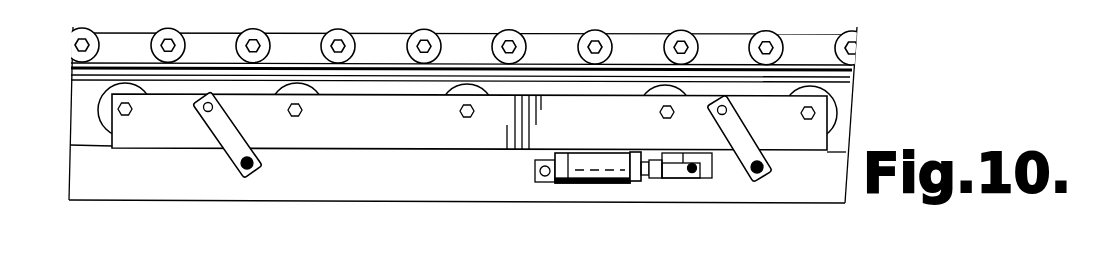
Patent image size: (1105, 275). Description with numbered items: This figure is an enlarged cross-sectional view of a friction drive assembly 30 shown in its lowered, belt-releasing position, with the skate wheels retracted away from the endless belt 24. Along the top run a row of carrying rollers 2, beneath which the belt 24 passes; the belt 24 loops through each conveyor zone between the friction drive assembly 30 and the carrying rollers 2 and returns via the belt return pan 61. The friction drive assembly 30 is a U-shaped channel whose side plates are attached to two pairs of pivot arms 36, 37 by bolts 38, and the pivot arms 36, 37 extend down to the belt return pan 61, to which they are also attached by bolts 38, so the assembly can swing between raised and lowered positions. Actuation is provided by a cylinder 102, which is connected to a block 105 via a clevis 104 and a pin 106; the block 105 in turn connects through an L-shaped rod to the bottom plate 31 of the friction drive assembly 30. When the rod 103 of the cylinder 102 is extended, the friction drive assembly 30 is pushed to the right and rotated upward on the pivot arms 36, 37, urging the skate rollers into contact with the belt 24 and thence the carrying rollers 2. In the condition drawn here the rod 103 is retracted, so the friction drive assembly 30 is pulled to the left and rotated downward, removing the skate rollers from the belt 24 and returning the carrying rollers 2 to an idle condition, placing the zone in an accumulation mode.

The carrying rollers 2 is at (168, 28).
The endless belt 24 is at (397, 63).
The friction drive assembly 30 is at (378, 149).
The bottom plate 31 is at (311, 148).
The pivot arm 36 is at (244, 124).
The pivot arm 37 is at (752, 143).
The bolts 38 is at (200, 110).
The belt return pan 61 is at (435, 181).
The cylinder 102 is at (600, 185).
The rod 103 is at (653, 179).
The clevis 104 is at (663, 156).
The block 105 is at (711, 175).
The pin 106 is at (699, 152).